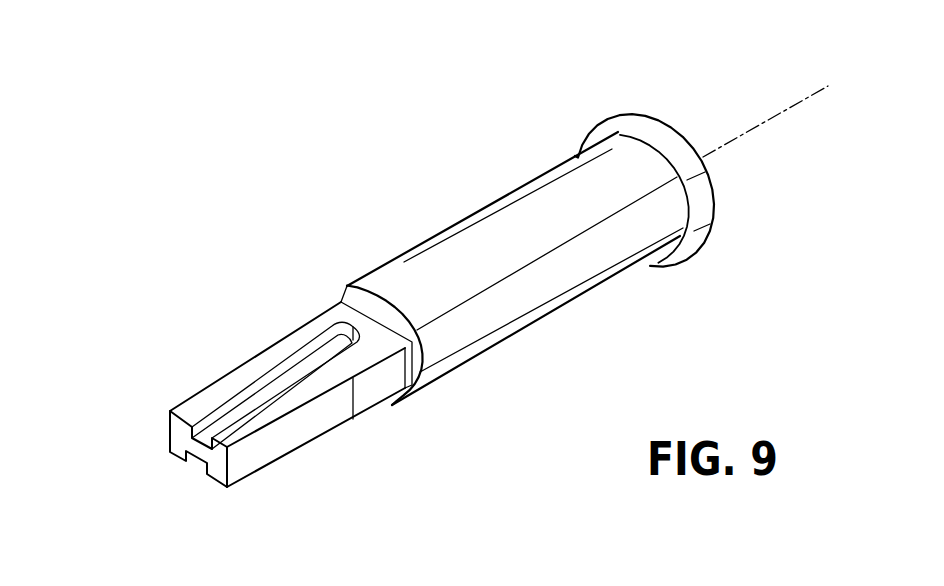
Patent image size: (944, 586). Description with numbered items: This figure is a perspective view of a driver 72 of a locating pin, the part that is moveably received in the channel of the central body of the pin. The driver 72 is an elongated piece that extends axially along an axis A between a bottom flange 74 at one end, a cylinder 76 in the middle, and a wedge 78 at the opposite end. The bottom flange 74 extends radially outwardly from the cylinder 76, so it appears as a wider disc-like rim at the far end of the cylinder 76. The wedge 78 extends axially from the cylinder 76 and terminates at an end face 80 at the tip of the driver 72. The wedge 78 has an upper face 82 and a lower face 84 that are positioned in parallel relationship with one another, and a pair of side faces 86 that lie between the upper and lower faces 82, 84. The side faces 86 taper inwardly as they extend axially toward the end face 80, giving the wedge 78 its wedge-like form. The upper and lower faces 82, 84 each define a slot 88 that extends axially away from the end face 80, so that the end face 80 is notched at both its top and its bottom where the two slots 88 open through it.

The driver 72 is at (369, 187).
The bottom flange 74 is at (707, 210).
The cylinder 76 is at (568, 282).
The wedge 78 is at (325, 420).
The end face 80 is at (172, 428).
The upper face 82 is at (266, 362).
The lower face 84 is at (254, 478).
The side faces 86 is at (277, 453).
The slot 88 is at (215, 412).
The longitudinal axis A is at (780, 113).